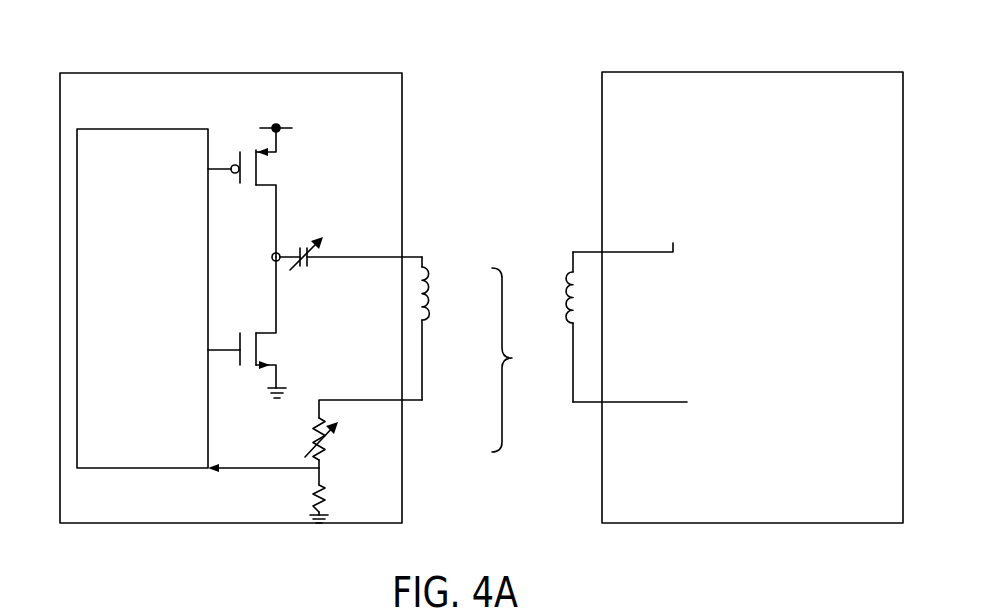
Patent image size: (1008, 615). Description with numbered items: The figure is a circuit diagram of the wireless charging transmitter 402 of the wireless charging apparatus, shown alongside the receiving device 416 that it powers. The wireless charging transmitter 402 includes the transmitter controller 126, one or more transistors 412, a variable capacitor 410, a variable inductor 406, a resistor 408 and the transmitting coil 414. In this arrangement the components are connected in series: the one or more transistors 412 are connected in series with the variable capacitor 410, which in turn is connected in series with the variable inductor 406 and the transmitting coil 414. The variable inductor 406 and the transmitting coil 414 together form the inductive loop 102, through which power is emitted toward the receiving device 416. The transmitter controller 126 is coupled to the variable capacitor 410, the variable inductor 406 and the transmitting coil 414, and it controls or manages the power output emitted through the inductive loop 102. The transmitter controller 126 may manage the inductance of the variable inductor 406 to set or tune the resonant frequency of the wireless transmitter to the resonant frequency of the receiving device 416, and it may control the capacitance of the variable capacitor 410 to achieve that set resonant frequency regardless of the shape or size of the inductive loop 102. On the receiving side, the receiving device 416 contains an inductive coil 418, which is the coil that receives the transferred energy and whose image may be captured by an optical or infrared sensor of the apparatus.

The inductive loop 102 is at (518, 360).
The transmitter controller 126 is at (77, 297).
The wireless charging transmitter 402 is at (107, 73).
The variable inductor 406 is at (327, 448).
The resistor 408 is at (315, 502).
The variable capacitor 410 is at (300, 246).
The transistors 412 is at (277, 153).
The transmitting coil 414 is at (428, 305).
The receiving device 416 is at (602, 83).
The inductive coil 418 is at (577, 323).